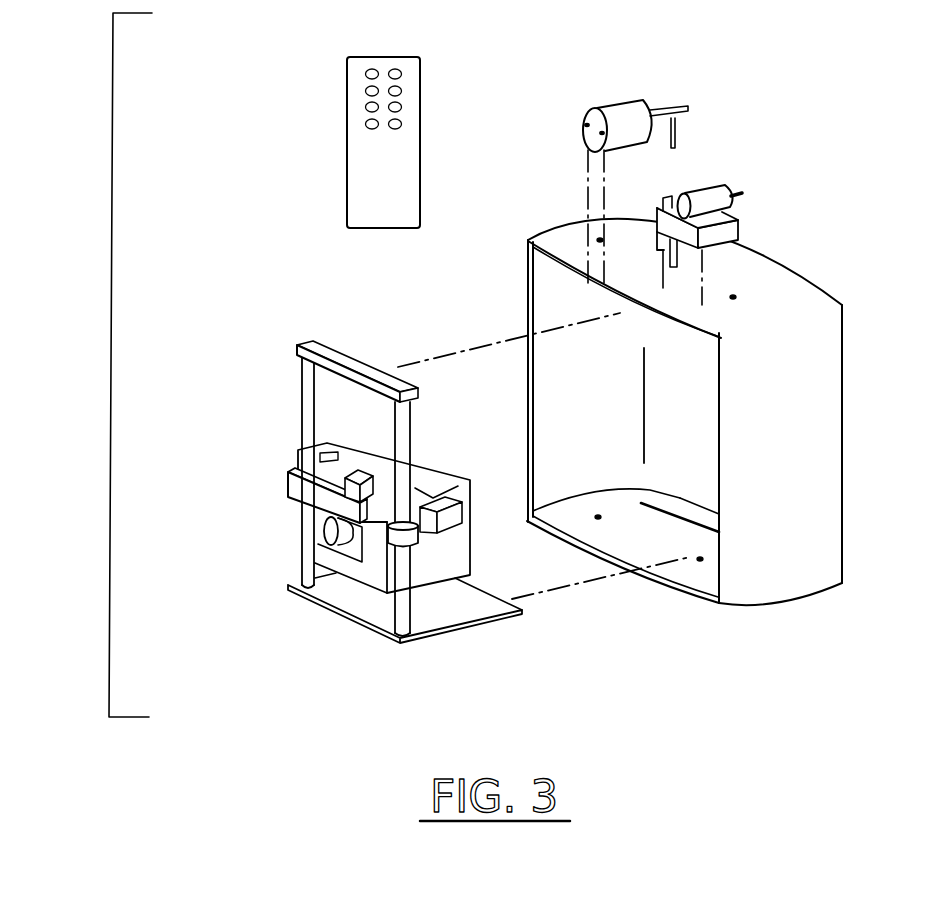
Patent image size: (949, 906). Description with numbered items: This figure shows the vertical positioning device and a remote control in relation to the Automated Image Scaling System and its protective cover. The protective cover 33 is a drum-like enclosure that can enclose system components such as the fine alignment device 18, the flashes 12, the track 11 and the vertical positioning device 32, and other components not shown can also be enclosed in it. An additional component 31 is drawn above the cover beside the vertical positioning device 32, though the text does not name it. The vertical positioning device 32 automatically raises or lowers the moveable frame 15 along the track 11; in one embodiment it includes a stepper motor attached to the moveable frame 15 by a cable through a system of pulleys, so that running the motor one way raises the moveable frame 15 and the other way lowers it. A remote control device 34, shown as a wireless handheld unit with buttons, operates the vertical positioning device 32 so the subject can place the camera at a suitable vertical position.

The track 11 is at (300, 410).
The flashes 12 is at (443, 518).
The moveable frame 15 is at (365, 587).
The fine alignment device 18 is at (330, 502).
The camera 31 is at (637, 98).
The vertical positioning device 32 is at (707, 187).
The protective cover 33 is at (805, 507).
The remote control device 34 is at (378, 191).